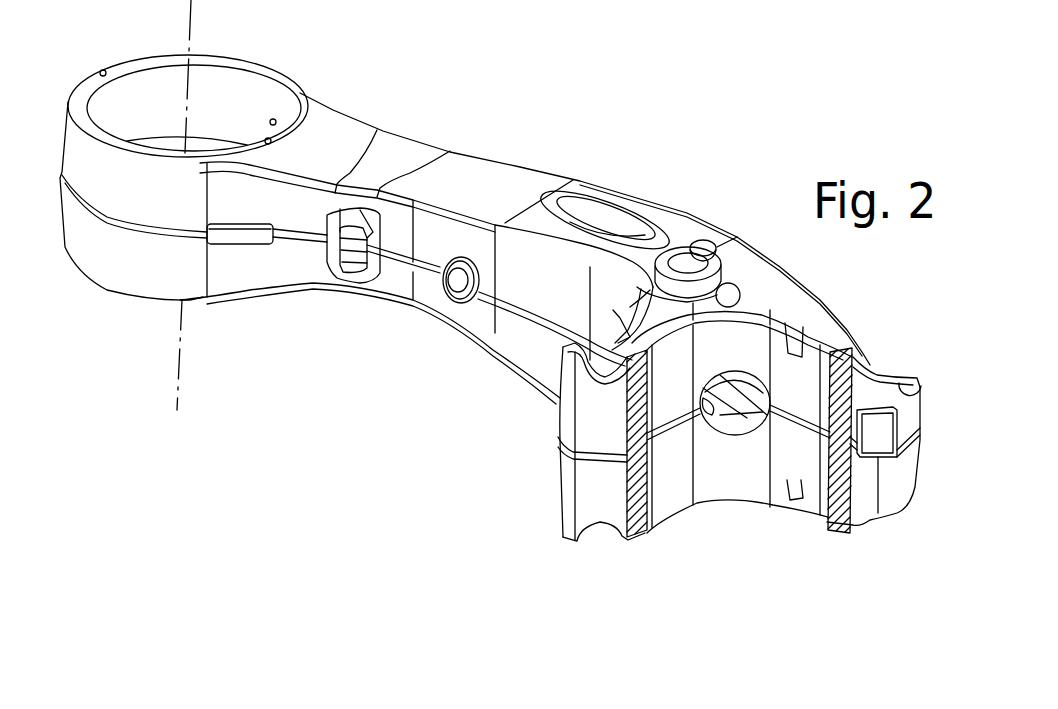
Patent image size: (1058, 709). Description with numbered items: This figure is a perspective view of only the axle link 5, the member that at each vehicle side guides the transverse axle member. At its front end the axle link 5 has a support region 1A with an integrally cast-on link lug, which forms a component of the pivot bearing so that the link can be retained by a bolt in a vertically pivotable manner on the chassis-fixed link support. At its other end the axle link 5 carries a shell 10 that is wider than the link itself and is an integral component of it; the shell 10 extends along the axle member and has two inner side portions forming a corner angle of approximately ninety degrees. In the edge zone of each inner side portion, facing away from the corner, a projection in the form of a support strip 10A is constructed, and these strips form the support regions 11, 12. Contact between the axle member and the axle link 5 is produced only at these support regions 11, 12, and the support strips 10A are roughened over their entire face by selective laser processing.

The support region 1A is at (230, 118).
The axle link 5 is at (507, 340).
The shell 10 is at (683, 443).
The support strip 10A is at (842, 477).
The support region 11 is at (640, 480).
The support region 12 is at (793, 440).